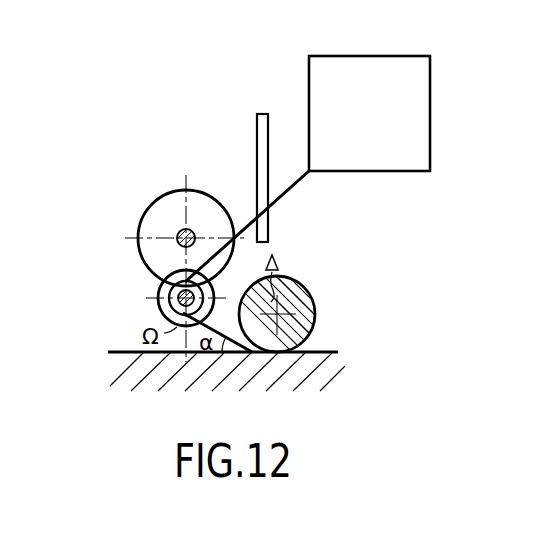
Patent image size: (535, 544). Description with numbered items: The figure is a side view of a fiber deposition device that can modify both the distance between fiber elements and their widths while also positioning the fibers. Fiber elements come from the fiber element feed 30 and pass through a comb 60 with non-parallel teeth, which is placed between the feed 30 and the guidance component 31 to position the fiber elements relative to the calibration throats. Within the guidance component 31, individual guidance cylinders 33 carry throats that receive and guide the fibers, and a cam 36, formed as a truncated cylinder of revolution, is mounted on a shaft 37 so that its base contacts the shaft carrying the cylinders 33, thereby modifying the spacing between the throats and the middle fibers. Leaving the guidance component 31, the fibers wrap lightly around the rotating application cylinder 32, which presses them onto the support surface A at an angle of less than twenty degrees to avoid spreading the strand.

The fiber element feed 30 is at (381, 124).
The fiber element guidance component 31 is at (140, 193).
The fiber element application cylinder 32 is at (298, 285).
The cylinders 33 is at (162, 293).
The cam 36 is at (158, 187).
The shaft 37 is at (177, 235).
The comb 60 is at (257, 142).
The support surface A is at (331, 374).